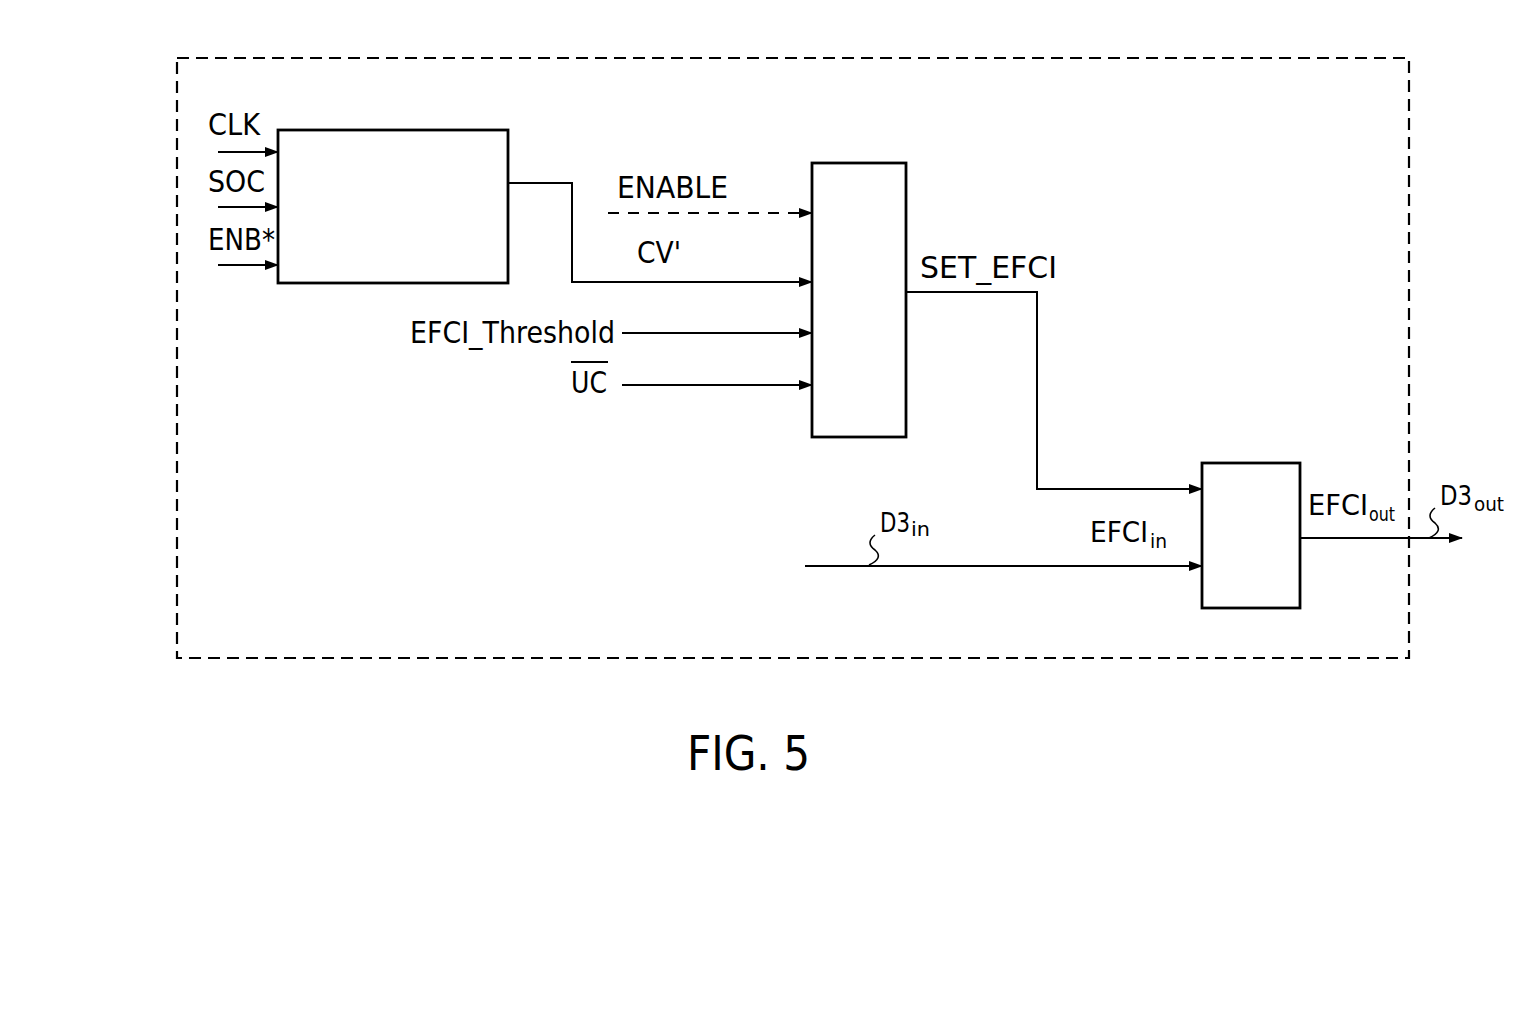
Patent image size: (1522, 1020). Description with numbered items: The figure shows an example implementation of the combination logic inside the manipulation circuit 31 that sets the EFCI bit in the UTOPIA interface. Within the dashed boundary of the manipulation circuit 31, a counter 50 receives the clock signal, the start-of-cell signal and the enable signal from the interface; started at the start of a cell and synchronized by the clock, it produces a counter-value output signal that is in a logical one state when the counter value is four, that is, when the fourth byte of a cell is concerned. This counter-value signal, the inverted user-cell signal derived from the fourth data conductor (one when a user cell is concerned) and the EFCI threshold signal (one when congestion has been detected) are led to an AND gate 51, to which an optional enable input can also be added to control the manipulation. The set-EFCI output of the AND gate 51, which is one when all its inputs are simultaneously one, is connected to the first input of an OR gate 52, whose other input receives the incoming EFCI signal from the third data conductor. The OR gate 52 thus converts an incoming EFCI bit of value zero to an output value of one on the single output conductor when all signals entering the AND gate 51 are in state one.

The manipulation circuit 31 is at (950, 60).
The counter 50 is at (379, 131).
The AND gate 51 is at (840, 165).
The OR gate 52 is at (1234, 468).